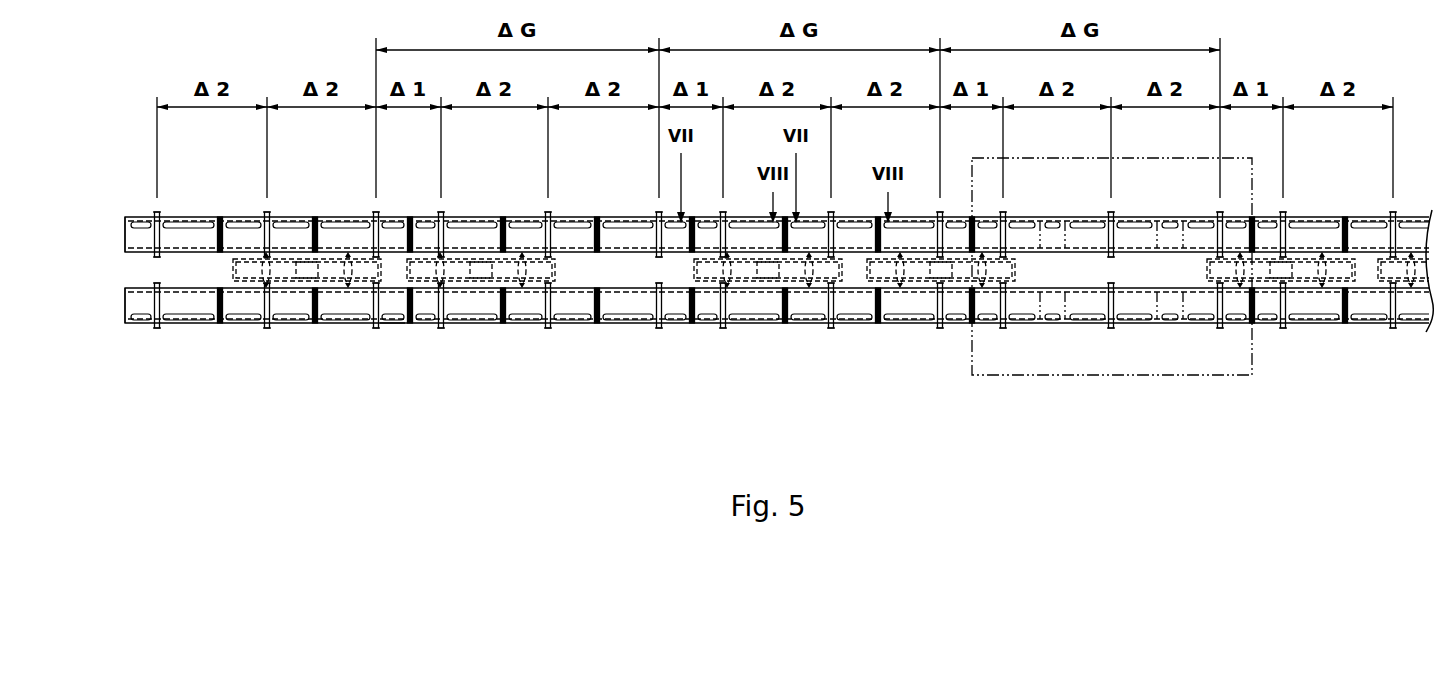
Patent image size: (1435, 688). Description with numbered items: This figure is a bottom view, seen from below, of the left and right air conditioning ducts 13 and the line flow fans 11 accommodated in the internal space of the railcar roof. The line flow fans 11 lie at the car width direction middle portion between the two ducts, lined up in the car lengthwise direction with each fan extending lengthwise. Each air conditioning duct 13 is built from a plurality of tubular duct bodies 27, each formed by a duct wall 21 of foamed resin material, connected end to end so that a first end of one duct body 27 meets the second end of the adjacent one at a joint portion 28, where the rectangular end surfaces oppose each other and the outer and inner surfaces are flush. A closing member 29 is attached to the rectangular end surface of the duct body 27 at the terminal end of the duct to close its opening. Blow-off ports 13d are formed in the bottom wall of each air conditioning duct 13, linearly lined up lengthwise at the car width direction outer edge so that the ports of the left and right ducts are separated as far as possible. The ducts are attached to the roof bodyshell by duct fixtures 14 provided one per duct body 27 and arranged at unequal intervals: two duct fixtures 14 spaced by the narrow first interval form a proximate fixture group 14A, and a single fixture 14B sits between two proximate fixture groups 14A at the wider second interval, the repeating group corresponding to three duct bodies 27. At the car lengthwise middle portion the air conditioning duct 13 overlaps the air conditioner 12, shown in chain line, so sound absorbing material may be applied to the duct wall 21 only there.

The line flow fan 11 is at (292, 284).
The air conditioner 12 is at (1113, 375).
The air conditioning duct 13 is at (645, 240).
The blow-off port 13d is at (203, 322).
The duct fixture 14 is at (775, 321).
The proximate fixture group 14A is at (720, 328).
The single fixture 14B is at (830, 328).
The duct wall 21 is at (392, 304).
The duct body 27 is at (214, 302).
The joint portion 28 is at (220, 337).
The closing member 29 is at (125, 237).